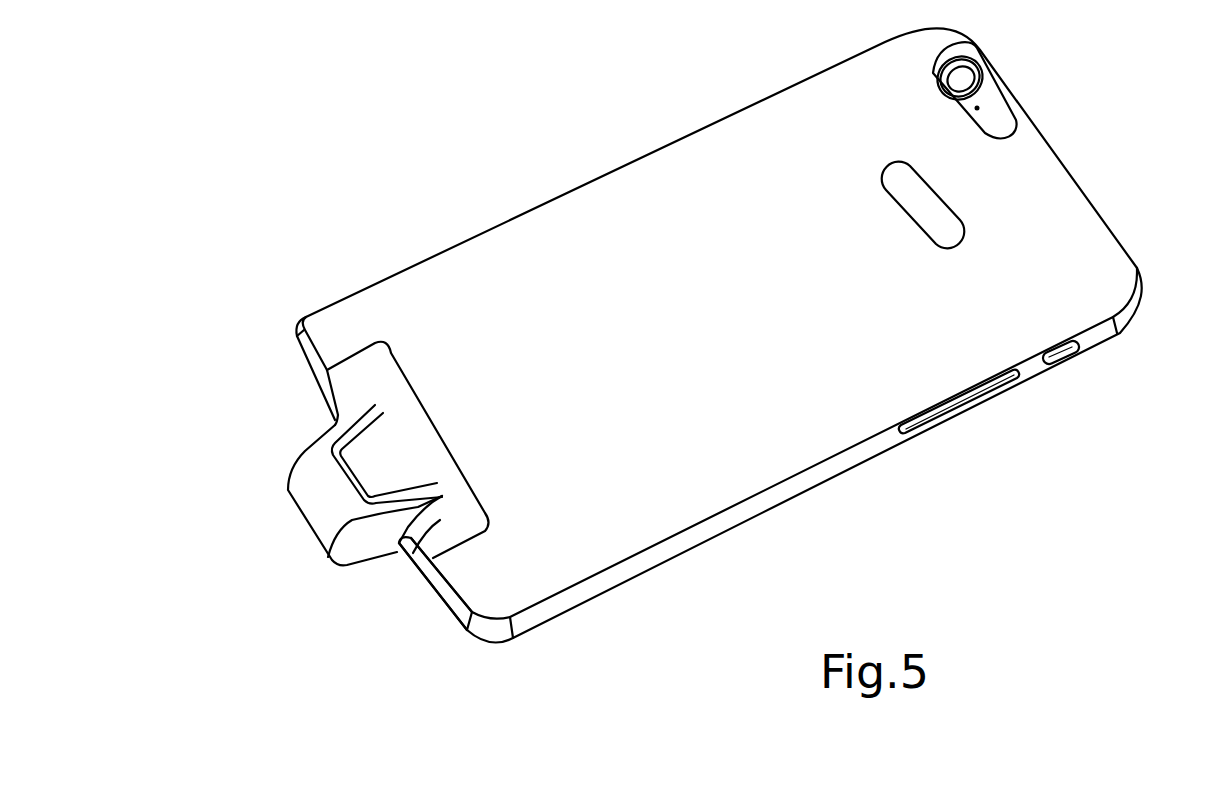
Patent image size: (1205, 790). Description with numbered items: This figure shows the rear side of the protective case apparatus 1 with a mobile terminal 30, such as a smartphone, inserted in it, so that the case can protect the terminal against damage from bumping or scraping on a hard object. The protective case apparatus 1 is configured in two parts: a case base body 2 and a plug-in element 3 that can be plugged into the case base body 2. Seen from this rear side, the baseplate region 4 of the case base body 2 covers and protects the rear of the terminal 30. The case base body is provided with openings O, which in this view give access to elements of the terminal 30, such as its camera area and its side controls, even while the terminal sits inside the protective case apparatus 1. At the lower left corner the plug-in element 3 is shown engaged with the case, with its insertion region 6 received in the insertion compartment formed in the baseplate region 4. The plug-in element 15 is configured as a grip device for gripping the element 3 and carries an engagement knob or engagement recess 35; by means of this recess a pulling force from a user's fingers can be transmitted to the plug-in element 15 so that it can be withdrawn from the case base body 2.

The protective case apparatus 1 is at (1080, 115).
The case base body 2 is at (1109, 216).
The plug-in element 3 is at (281, 445).
The baseplate region 4 is at (1048, 220).
The insertion region 6 is at (420, 572).
The plug-in element grip device 15 is at (315, 505).
The terminal 30 is at (985, 87).
The engagement recess 35 is at (372, 465).
The openings O is at (1007, 105).